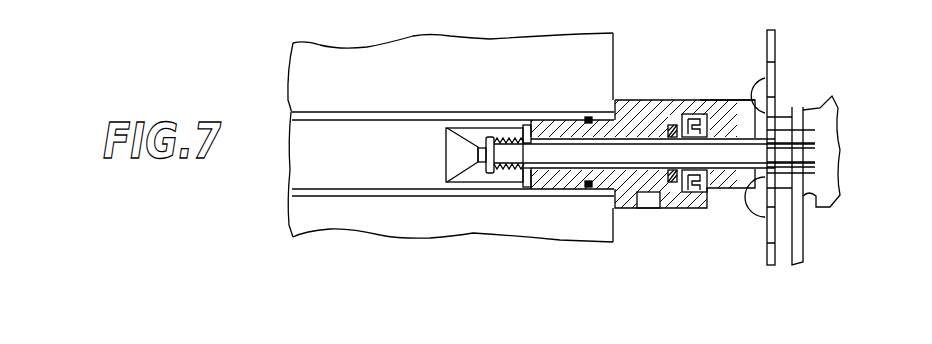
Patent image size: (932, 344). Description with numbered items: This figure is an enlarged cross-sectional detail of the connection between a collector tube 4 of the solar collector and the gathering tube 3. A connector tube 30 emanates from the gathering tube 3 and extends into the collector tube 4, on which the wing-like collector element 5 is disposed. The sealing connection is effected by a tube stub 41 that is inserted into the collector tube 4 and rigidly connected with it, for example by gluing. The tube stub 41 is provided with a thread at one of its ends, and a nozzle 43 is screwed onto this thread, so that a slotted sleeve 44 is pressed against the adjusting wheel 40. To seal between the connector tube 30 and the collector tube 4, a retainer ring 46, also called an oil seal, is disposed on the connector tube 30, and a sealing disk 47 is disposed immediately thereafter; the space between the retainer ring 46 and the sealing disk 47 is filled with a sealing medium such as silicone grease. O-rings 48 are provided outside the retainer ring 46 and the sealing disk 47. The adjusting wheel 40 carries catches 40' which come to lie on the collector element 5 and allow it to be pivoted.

The gathering tube 3 is at (840, 128).
The collector tube 4 is at (352, 171).
The collector element 5 is at (384, 98).
The connector tube 30 is at (562, 155).
The adjusting wheel 40 is at (804, 135).
The catch 40' is at (773, 241).
The tube stub 41 is at (632, 100).
The nozzle 43 is at (473, 178).
The slotted sleeve 44 is at (755, 180).
The retainer ring 46 is at (697, 192).
The sealing disk 47 is at (697, 100).
The O-ring 48 is at (660, 196).